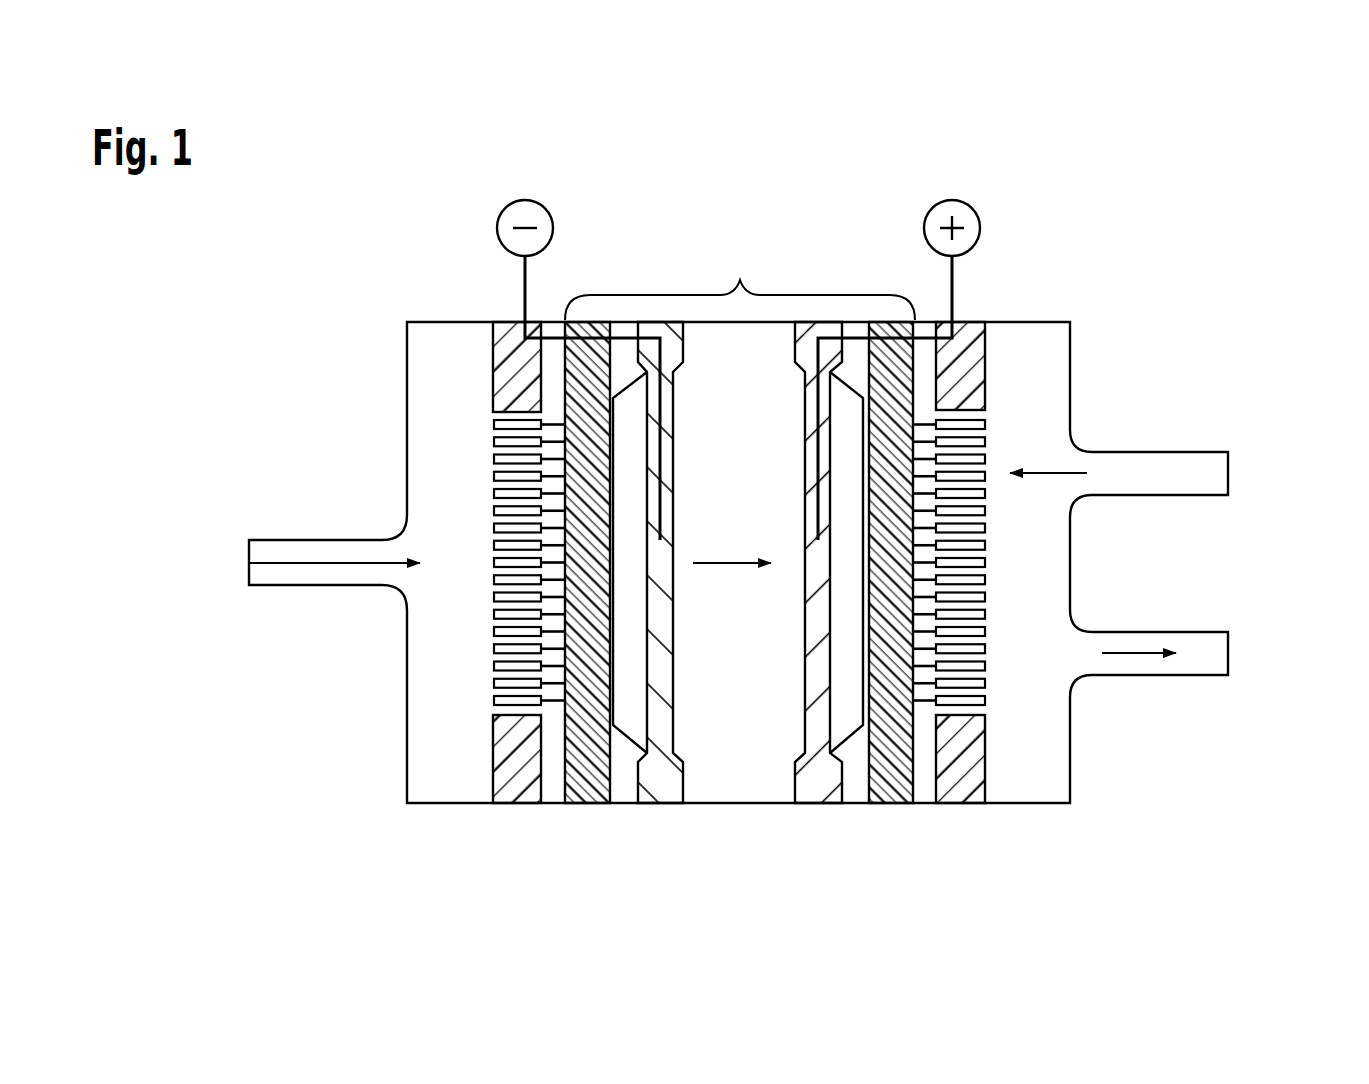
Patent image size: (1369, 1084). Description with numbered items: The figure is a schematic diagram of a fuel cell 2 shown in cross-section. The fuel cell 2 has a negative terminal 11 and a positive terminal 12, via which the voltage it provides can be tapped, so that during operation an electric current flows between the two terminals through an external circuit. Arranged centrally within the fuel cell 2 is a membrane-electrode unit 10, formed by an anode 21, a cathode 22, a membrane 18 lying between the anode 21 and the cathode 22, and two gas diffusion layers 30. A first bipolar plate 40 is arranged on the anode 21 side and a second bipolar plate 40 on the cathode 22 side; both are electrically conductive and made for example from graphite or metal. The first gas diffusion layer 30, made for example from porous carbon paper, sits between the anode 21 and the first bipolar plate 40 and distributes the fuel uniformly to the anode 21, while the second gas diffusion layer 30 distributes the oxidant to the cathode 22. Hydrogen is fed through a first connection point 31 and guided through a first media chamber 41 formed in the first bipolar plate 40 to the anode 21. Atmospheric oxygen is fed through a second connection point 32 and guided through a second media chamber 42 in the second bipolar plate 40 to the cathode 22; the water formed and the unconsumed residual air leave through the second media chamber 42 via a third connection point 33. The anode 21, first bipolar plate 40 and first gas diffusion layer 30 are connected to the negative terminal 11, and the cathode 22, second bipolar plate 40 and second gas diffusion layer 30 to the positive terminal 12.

The fuel cell 2 is at (348, 310).
The membrane-electrode unit 10 is at (740, 281).
The negative terminal 11 is at (526, 205).
The positive terminal 12 is at (955, 205).
The membrane 18 is at (750, 775).
The anode 21 is at (664, 775).
The cathode 22 is at (826, 775).
The gas diffusion layer 30 is at (594, 775).
The first connection point 31 is at (268, 578).
The second connection point 32 is at (1212, 470).
The third connection point 33 is at (1212, 650).
The bipolar plate 40 is at (516, 775).
The first media chamber 41 is at (555, 700).
The second media chamber 42 is at (928, 700).